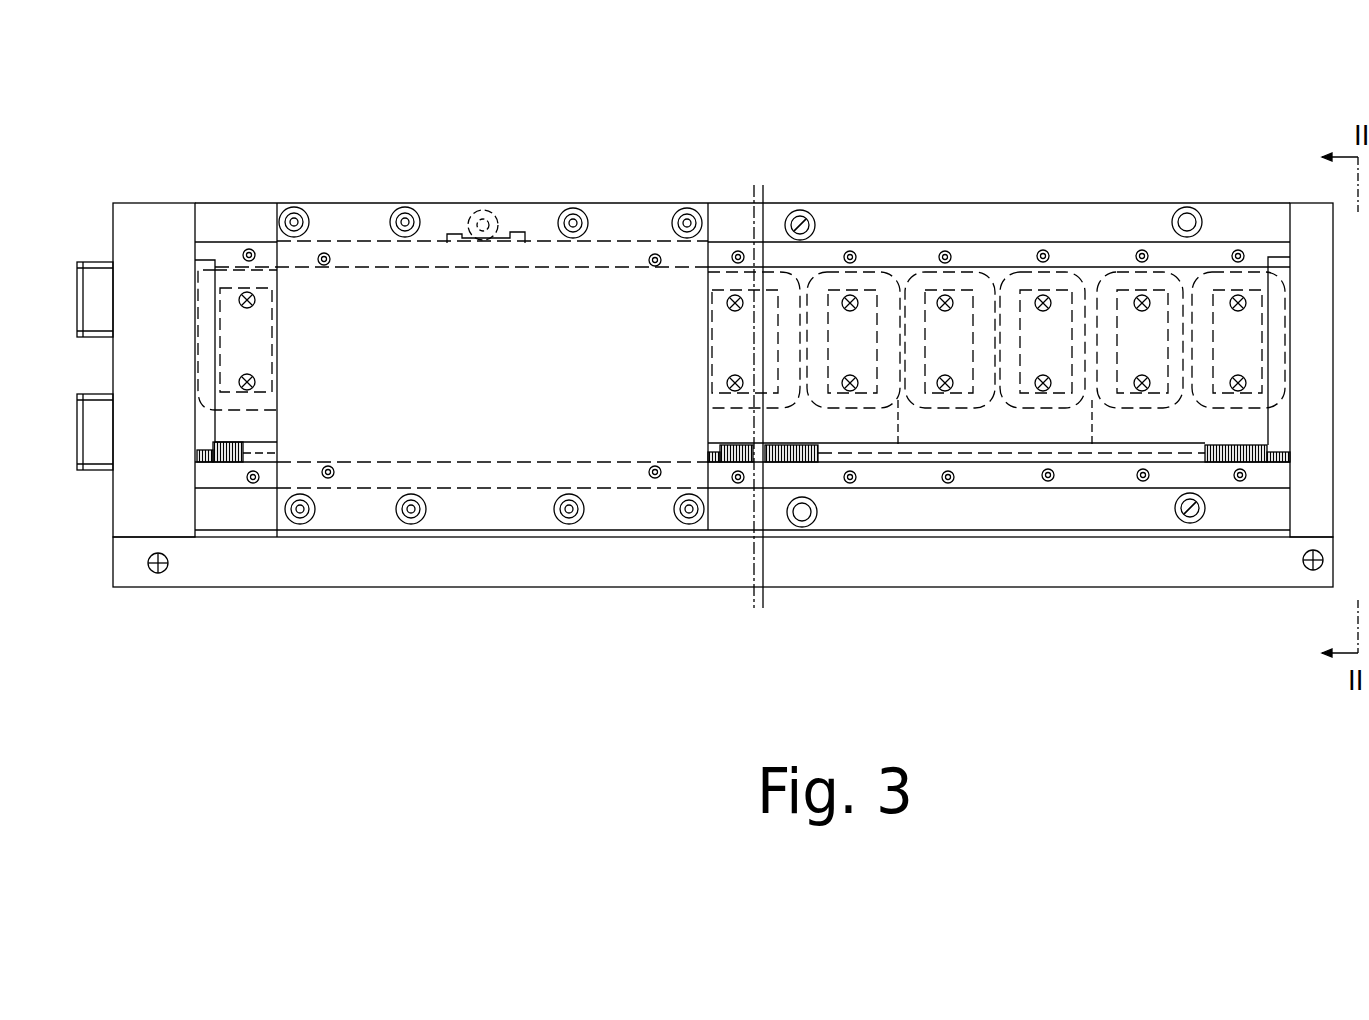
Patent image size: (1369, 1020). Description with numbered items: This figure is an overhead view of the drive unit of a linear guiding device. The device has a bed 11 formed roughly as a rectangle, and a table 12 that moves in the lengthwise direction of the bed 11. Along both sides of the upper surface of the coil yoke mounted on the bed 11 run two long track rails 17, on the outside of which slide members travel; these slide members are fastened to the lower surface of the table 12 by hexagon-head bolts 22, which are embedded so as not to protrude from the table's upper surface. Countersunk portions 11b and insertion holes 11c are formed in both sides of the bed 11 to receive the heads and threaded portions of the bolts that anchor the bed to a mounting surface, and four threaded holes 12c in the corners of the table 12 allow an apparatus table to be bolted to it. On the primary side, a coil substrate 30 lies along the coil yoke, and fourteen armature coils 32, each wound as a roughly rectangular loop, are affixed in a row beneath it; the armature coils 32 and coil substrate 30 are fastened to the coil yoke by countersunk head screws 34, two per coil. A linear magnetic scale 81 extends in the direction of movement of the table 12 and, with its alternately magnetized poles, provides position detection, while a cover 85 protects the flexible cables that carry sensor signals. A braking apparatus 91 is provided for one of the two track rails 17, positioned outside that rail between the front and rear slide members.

The bed 11 is at (238, 512).
The countersunk portions 11b is at (797, 212).
The insertion holes 11c is at (816, 206).
The table 12 is at (478, 450).
The threaded holes 12c is at (331, 253).
The track rails 17 is at (895, 255).
The bolts 22 is at (300, 214).
The coil substrate 30 is at (1089, 455).
The armature coils 32 is at (233, 285).
The countersunk head screws 34 is at (255, 300).
The linear magnetic scale 81 is at (982, 460).
The cover 85 is at (515, 577).
The braking apparatus 91 is at (510, 216).